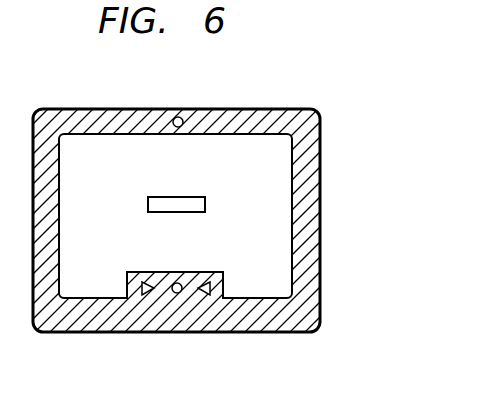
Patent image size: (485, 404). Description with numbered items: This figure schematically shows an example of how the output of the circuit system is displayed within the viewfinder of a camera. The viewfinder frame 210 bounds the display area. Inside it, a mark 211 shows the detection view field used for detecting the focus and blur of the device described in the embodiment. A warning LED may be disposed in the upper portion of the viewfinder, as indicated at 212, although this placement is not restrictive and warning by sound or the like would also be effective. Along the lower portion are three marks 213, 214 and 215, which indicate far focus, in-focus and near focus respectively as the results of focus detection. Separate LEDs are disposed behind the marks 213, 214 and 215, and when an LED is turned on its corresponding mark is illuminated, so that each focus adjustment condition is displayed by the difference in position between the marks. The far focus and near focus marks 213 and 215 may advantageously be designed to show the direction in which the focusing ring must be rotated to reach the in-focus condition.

The viewfinder frame 210 is at (312, 192).
The detection view field mark 211 is at (185, 203).
The LED display position 212 is at (178, 117).
The far focus mark 213 is at (143, 297).
The in-focus mark 214 is at (177, 294).
The near focus mark 215 is at (208, 297).